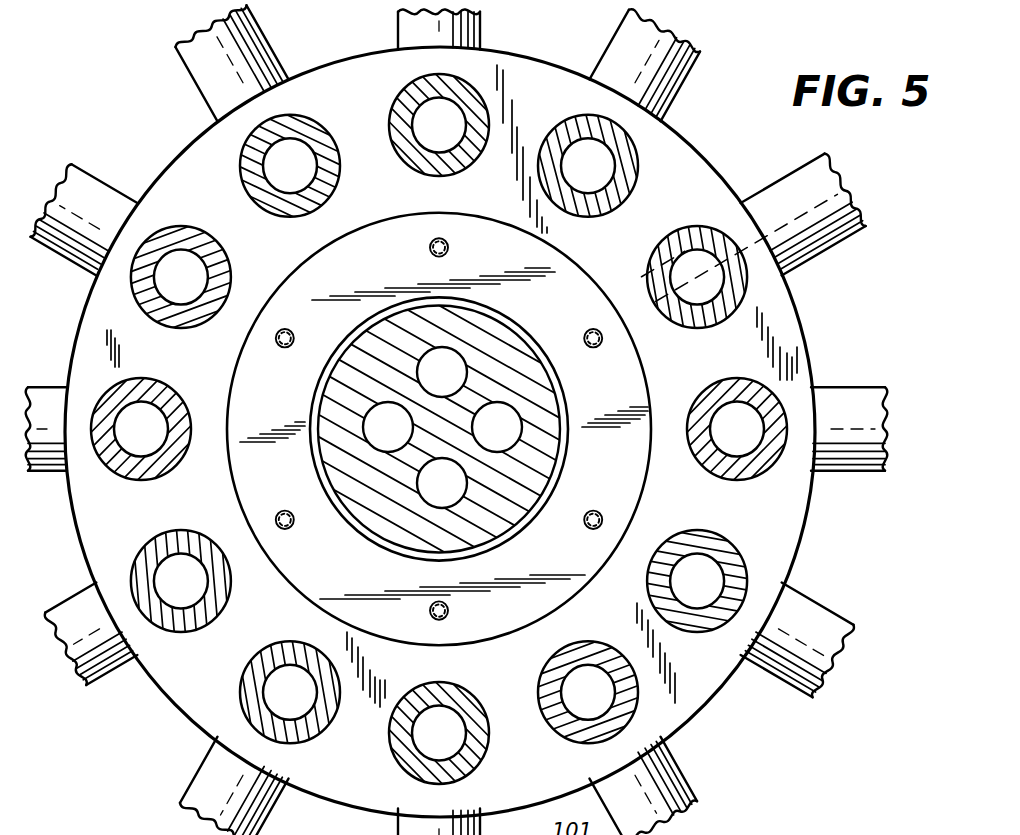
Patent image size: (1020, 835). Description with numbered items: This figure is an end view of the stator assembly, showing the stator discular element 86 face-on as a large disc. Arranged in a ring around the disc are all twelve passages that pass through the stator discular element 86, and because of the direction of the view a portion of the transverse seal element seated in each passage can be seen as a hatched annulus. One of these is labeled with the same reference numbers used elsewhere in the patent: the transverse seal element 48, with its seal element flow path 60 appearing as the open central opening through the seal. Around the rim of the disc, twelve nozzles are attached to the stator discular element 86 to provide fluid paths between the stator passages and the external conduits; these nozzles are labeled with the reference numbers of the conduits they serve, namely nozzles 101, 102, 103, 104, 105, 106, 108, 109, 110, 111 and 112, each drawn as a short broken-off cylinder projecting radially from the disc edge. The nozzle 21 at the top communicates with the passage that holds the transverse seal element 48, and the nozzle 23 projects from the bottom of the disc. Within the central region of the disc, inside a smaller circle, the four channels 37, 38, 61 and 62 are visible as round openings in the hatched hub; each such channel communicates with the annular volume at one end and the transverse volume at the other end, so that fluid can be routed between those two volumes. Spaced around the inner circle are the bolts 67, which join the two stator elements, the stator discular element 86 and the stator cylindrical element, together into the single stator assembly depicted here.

The nozzle 21 is at (465, 29).
The nozzle 23 is at (400, 813).
The channel 37 is at (431, 383).
The channel 38 is at (431, 494).
The transverse seal element 48 is at (312, 114).
The seal element flow path 60 is at (280, 170).
The channel 61 is at (377, 438).
The channel 62 is at (486, 438).
The bolt 67 is at (452, 246).
The stator discular element 86 is at (809, 347).
The nozzle 101 is at (439, 29).
The nozzle 102 is at (707, 421).
The nozzle 103 is at (766, 244).
The nozzle 104 is at (874, 429).
The nozzle 105 is at (814, 641).
The nozzle 106 is at (643, 786).
The nozzle 108 is at (234, 786).
The nozzle 109 is at (90, 635).
The nozzle 110 is at (46, 429).
The nozzle 111 is at (83, 219).
The nozzle 112 is at (231, 62).